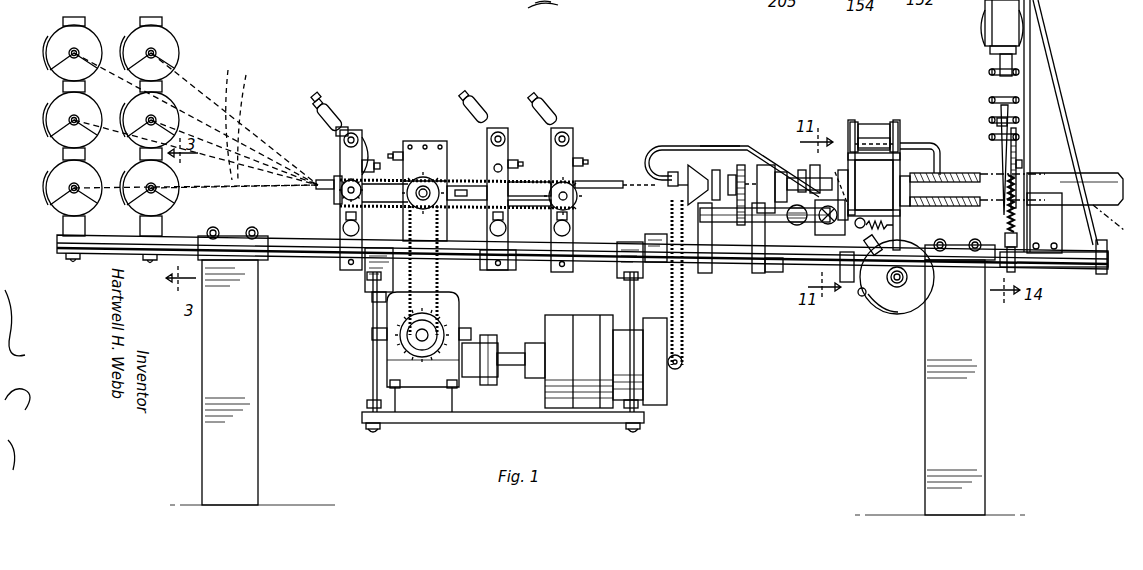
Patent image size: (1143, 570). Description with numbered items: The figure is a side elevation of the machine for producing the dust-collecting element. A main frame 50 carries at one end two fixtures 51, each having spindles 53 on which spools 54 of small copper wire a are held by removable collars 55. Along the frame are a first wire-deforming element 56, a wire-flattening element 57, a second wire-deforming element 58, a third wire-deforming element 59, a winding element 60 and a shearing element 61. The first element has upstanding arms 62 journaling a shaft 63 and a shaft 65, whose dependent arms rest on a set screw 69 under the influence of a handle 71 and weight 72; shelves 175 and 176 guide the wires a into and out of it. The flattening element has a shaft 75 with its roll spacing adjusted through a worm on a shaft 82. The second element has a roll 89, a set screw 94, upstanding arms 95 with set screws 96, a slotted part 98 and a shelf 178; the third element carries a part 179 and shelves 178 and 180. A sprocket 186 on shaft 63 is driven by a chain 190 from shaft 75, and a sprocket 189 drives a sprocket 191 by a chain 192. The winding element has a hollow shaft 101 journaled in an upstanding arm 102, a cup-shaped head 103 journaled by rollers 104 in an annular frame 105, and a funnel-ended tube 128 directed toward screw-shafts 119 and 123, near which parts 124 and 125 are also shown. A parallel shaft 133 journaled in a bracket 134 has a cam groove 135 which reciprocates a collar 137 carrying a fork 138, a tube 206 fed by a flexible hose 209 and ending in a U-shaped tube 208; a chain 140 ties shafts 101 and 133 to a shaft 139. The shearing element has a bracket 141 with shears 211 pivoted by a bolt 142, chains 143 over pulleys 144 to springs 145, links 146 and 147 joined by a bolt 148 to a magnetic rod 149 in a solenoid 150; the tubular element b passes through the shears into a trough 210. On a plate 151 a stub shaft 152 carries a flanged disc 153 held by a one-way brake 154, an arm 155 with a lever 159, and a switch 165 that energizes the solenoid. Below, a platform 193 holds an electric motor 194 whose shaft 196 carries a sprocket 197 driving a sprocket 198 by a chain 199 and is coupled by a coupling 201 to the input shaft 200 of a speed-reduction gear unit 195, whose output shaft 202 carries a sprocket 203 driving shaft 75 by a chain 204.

The main frame 50 is at (300, 254).
The fixtures 51 is at (75, 230).
The spindle 53 is at (88, 32).
The spool 54 is at (85, 65).
The removable collar 55 is at (52, 100).
The first wire-deforming element 56 is at (366, 145).
The wire-flattening element 57 is at (428, 140).
The second wire-deforming element 58 is at (496, 126).
The third wire-deforming element 59 is at (574, 133).
The winding element 60 is at (848, 122).
The shearing element 61 is at (1055, 88).
The upstanding arms 62 is at (342, 157).
The shaft 63 is at (338, 192).
The shaft 65 is at (337, 131).
The set screw 69 is at (368, 160).
The handle 71 is at (314, 96).
The weight 72 is at (328, 106).
The shaft 75 is at (430, 190).
The shaft 82 is at (398, 150).
The roll 89 is at (486, 195).
The set screw 94 is at (556, 128).
The upstanding arms 95 is at (520, 160).
The set screws 96 is at (494, 168).
The part 98 is at (520, 198).
The hollow shaft 101 is at (764, 166).
The upstanding arm 102 is at (752, 165).
The cup-shaped head 103 is at (874, 137).
The rollers 104 is at (866, 122).
The annular frame 105 is at (906, 142).
The screw-shaft 119 is at (998, 128).
The screw-shaft 123 is at (984, 232).
The screw 124 is at (920, 206).
The screw 125 is at (930, 172).
The tube 128 is at (905, 176).
The shaft 133 is at (708, 262).
The bracket 134 is at (770, 272).
The cam groove 135 is at (760, 262).
The collar 137 is at (838, 206).
The fork 138 is at (805, 170).
The shaft 139 is at (668, 236).
The chain 140 is at (740, 164).
The bracket 141 is at (1032, 166).
The bolt 142 is at (998, 146).
The chain 143 is at (1016, 150).
The pulley 144 is at (1018, 134).
The spring 145 is at (1016, 212).
The link 146 is at (1012, 114).
The links 147 is at (998, 90).
The bolt 148 is at (1010, 102).
The rod 149 is at (1012, 60).
The solenoid 150 is at (990, 18).
The plate 151 is at (850, 282).
The stub shaft 152 is at (904, 282).
The flanged disc 153 is at (910, 306).
The one-way brake 154 is at (862, 297).
The arm 155 is at (882, 240).
The lever 159 is at (882, 222).
The switch 165 is at (903, 270).
The shelf 175 is at (316, 186).
The shelf 176 is at (386, 178).
The shelf 178 is at (435, 205).
The nut 179 is at (580, 157).
The flanged shelf 180 is at (592, 180).
The sprocket 186 is at (338, 200).
The sprocket 189 is at (398, 205).
The chain 190 is at (366, 258).
The sprocket 191 is at (576, 200).
The chain 192 is at (510, 258).
The platform 193 is at (468, 424).
The electric motor 194 is at (580, 328).
The speed-reduction gear unit 195 is at (452, 295).
The shaft 196 is at (520, 352).
The sprocket 197 is at (684, 364).
The sprocket 198 is at (688, 192).
The chain 199 is at (684, 318).
The input shaft 200 is at (472, 345).
The coupling 201 is at (492, 386).
The output shaft 202 is at (418, 338).
The sprocket 203 is at (400, 333).
The chain 204 is at (440, 268).
The tube 206 is at (700, 146).
The U-shaped tube 208 is at (654, 150).
The flexible hose 209 is at (770, 222).
The trough 210 is at (1060, 190).
The shears 211 is at (1003, 196).
The copper wire a is at (239, 123).
The tubular element b is at (1108, 220).
The wire c is at (639, 173).